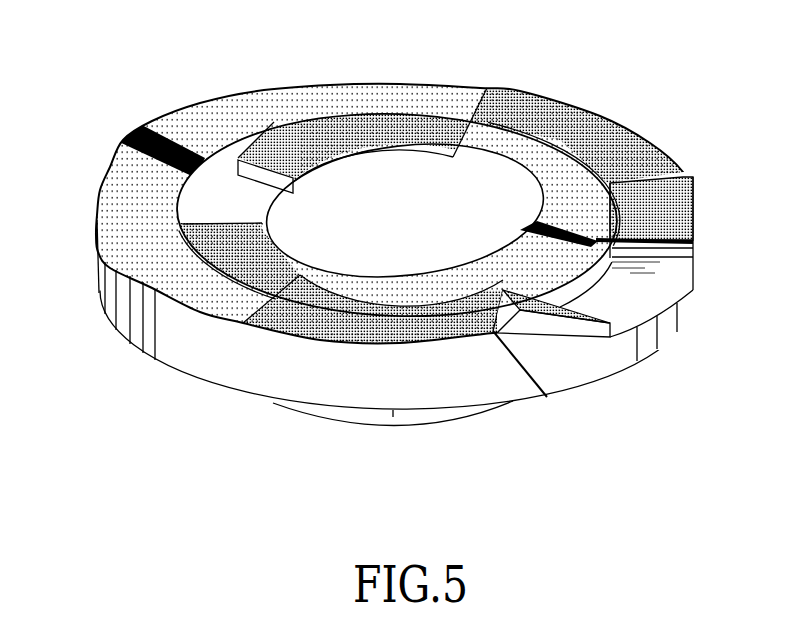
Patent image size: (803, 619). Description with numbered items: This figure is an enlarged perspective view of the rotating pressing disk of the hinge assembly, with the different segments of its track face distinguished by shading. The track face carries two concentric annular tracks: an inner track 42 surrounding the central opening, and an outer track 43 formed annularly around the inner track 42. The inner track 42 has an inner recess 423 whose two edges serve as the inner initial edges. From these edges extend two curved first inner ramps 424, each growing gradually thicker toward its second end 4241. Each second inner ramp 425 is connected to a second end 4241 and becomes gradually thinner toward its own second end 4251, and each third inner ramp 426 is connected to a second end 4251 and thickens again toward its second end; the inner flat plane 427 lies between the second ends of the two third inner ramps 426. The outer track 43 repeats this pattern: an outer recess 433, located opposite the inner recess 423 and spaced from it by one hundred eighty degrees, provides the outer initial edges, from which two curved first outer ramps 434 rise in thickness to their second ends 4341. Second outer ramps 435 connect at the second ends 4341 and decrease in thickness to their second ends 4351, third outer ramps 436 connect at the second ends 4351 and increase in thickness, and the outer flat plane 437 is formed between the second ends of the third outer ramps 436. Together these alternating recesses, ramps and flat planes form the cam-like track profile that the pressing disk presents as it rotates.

The outer track 43 is at (401, 309).
The inner track 42 is at (401, 309).
The inner recess 423 is at (222, 203).
The first inner ramp 424 is at (292, 203).
The second end of first inner ramp 4241 is at (317, 128).
The second inner ramp 425 is at (438, 138).
The second end of second inner ramp 4251 is at (528, 137).
The third inner ramp 426 is at (522, 168).
The inner flat plane 427 is at (594, 239).
The outer recess 433 is at (643, 297).
The first outer ramp 434 is at (632, 301).
The second end of first outer ramp 4341 is at (548, 396).
The second outer ramp 435 is at (607, 133).
The second end of second outer ramp 4351 is at (226, 322).
The third outer ramp 436 is at (413, 91).
The outer flat plane 437 is at (133, 153).